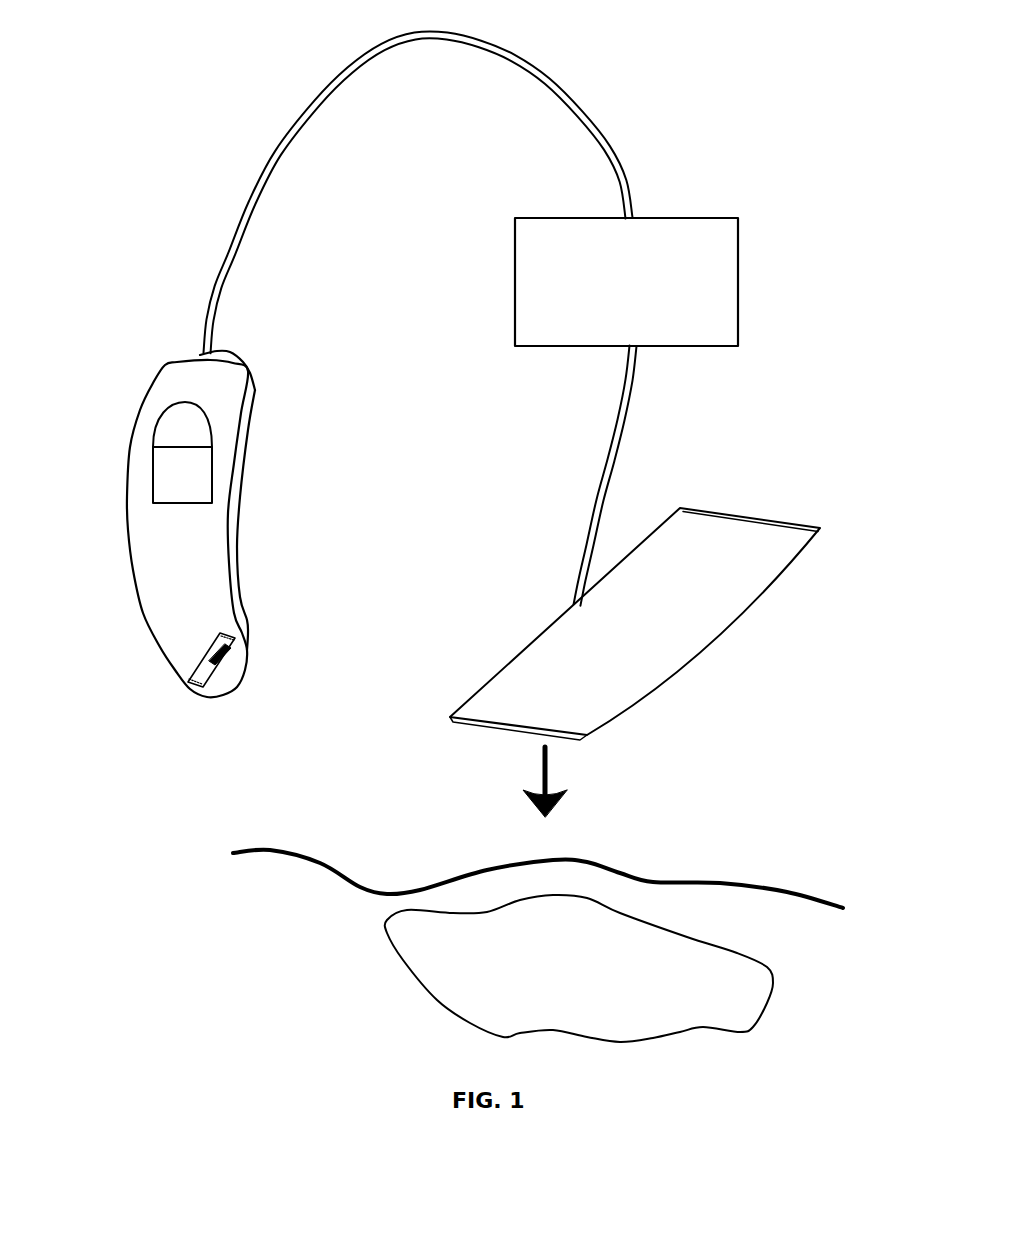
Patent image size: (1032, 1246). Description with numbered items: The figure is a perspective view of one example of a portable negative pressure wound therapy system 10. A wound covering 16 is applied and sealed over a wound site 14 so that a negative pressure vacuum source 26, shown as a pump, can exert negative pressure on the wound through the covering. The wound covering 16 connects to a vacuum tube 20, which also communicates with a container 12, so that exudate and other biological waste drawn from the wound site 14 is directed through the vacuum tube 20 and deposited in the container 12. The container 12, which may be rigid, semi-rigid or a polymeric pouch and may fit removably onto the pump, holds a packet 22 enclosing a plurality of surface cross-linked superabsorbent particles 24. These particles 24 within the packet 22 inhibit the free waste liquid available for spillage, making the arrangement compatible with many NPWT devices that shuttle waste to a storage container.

The portable negative pressure wound therapy system 10 is at (227, 140).
The container 12 is at (157, 403).
The wound site 14 is at (447, 960).
The wound covering 16 is at (654, 592).
The vacuum tube 20 is at (560, 82).
The packet 22 is at (205, 673).
The surface cross-linked superabsorbent particles 24 is at (230, 652).
The negative pressure vacuum source 26 is at (733, 273).